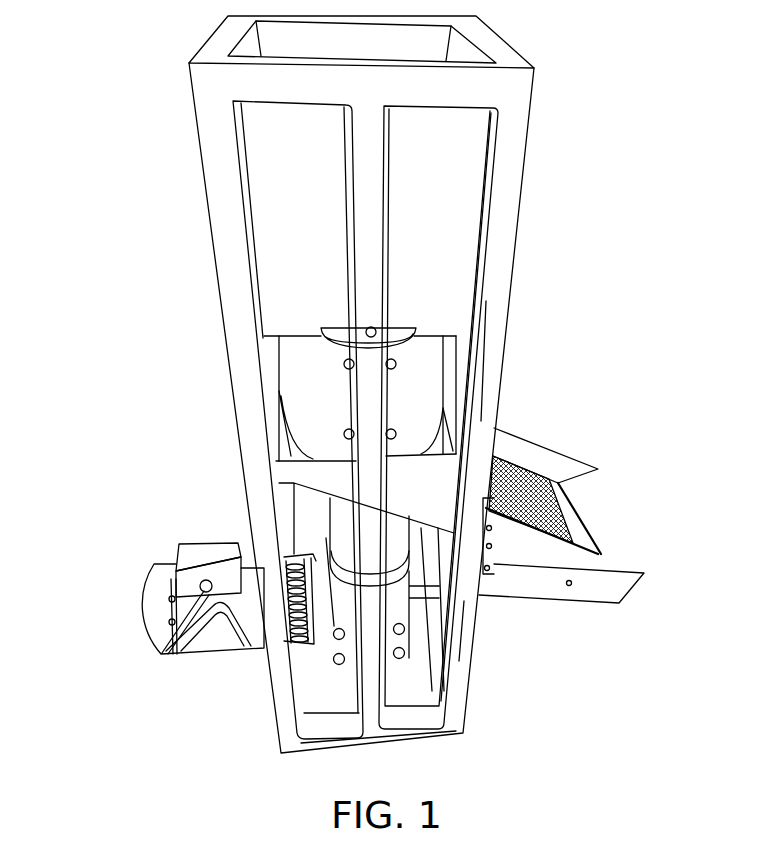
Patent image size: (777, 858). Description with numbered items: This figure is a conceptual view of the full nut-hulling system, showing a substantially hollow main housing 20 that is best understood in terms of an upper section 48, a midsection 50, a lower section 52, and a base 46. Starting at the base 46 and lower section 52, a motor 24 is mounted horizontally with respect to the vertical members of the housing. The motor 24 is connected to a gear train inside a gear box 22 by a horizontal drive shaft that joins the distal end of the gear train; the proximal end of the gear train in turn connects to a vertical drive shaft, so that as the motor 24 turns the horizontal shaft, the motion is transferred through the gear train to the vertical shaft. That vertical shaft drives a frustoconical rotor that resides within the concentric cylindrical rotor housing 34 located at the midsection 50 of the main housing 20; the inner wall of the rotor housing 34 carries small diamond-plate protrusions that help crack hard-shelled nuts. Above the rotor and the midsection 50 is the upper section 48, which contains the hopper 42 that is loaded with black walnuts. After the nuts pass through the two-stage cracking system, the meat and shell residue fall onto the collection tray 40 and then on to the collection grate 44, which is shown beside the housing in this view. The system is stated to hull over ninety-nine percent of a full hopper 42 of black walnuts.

The main housing 20 is at (371, 391).
The gear box 22 is at (350, 608).
The motor 24 is at (168, 588).
The concentric cylindrical rotor housing 34 is at (317, 422).
The collection tray 40 is at (605, 578).
The hopper 42 is at (456, 203).
The screen 44 is at (553, 513).
The base 46 is at (423, 723).
The upper section 48 is at (517, 103).
The midsection 50 is at (487, 413).
The lower section 52 is at (458, 632).